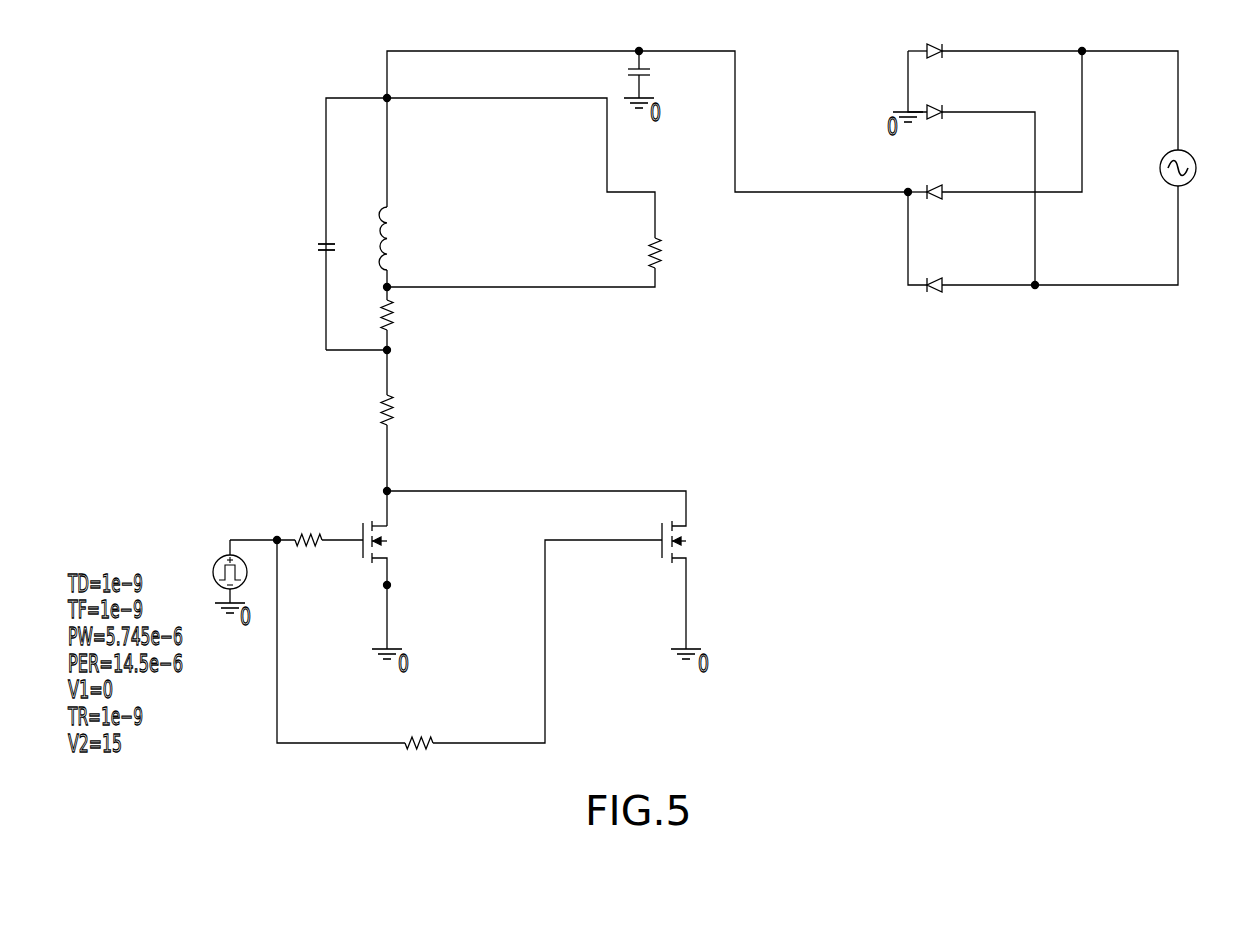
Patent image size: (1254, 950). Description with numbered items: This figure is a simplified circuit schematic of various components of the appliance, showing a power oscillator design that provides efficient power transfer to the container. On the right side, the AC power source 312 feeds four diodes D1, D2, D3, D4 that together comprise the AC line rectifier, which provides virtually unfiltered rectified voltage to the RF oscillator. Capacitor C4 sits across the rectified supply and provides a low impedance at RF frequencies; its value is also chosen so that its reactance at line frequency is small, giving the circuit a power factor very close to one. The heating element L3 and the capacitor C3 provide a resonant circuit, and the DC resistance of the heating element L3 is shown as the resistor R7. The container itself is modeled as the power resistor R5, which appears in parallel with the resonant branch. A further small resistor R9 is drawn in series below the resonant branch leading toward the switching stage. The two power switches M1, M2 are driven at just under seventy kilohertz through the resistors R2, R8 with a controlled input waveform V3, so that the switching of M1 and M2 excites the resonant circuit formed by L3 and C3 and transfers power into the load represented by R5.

The AC power source 312 is at (1193, 155).
The diode D1 is at (968, 47).
The diode D2 is at (968, 108).
The diode D3 is at (968, 188).
The diode D4 is at (968, 282).
The capacitor C3 is at (283, 245).
The capacitor C4 is at (637, 74).
The heating element L3 is at (407, 235).
The power resistor R5 is at (639, 246).
The resistor R7 is at (395, 311).
The resistor R9 (0.0001 ohm) R9 is at (419, 406).
The resistor R2 is at (307, 531).
The resistor R8 is at (421, 745).
The power switch M1 is at (425, 543).
The power switch M2 is at (624, 548).
The controlled input waveform V3 is at (217, 563).